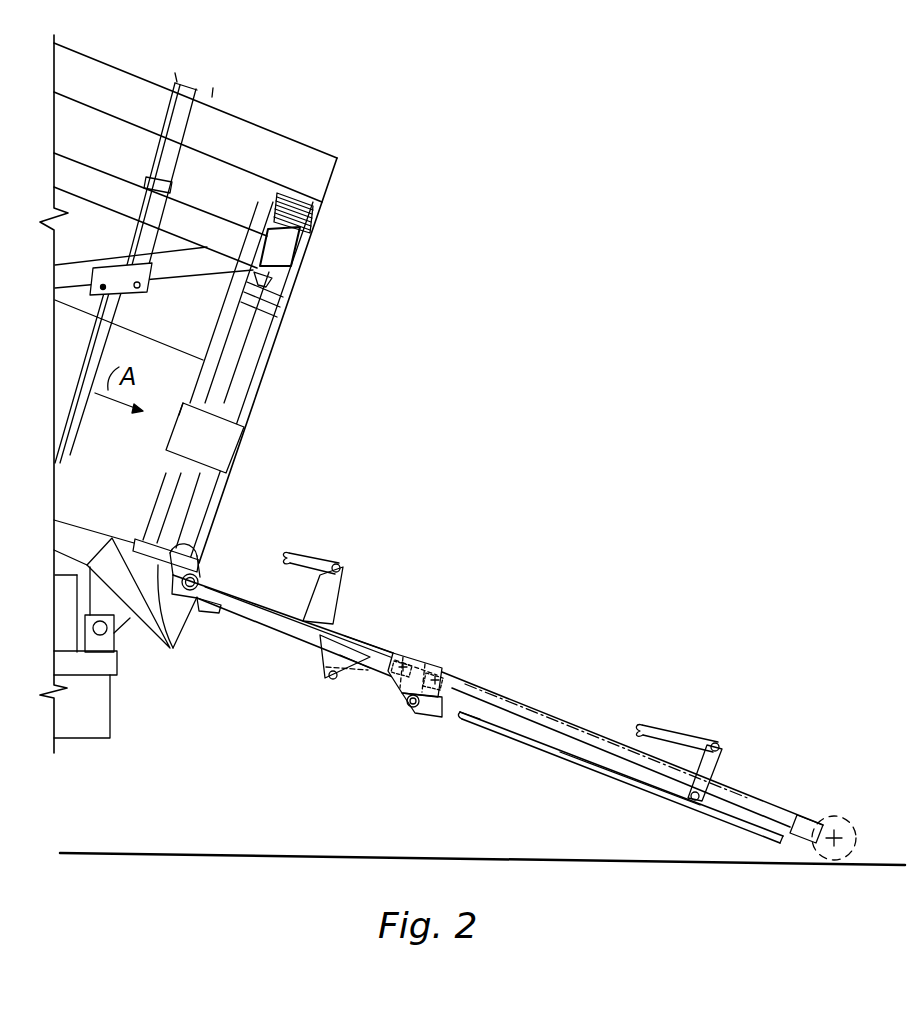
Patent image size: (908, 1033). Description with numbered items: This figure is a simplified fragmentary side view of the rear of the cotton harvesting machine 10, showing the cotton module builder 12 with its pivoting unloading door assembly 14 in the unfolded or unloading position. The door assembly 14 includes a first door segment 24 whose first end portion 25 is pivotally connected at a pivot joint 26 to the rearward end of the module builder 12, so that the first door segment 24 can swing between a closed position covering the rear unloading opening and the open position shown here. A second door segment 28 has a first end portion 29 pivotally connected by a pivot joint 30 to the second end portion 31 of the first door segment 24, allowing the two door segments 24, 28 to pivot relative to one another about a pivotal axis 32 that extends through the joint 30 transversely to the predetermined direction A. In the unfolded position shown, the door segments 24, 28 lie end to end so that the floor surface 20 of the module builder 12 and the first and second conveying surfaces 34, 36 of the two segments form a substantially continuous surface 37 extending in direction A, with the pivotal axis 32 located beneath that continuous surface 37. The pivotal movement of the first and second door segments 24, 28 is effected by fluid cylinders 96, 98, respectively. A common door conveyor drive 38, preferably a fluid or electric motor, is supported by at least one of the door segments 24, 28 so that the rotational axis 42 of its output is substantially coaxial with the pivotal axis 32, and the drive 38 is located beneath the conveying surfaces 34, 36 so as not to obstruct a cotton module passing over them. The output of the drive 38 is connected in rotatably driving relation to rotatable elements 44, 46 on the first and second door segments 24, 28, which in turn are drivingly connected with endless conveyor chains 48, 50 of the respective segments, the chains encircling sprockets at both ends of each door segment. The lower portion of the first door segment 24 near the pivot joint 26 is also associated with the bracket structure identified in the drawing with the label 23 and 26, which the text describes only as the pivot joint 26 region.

The cotton harvesting machine 10 is at (597, 153).
The cotton module builder 12 is at (345, 156).
The unloading door assembly 14 is at (803, 812).
The floor surface 20 is at (90, 530).
The bracket 23 is at (168, 648).
The first door segment 24 is at (350, 630).
The first end portion 25 is at (200, 606).
The pivot joint 26 is at (185, 622).
The second door segment 28 is at (603, 737).
The first end portion 29 is at (465, 720).
The pivot joint 30 is at (413, 710).
The second end portion 31 is at (387, 650).
The pivotal axis 32 is at (406, 702).
The first conveying surface 34 is at (243, 597).
The second conveying surface 36 is at (588, 727).
The substantially continuous surface 37 is at (770, 802).
The common door conveyor drive 38 is at (440, 717).
The rotational axis 42 is at (355, 661).
The rotatable element 44 is at (407, 652).
The rotatable element 46 is at (440, 667).
The endless conveyor chain 48 is at (338, 600).
The endless conveyor chain 50 is at (530, 705).
The fluid cylinder 96 is at (315, 556).
The fluid cylinder 98 is at (688, 735).